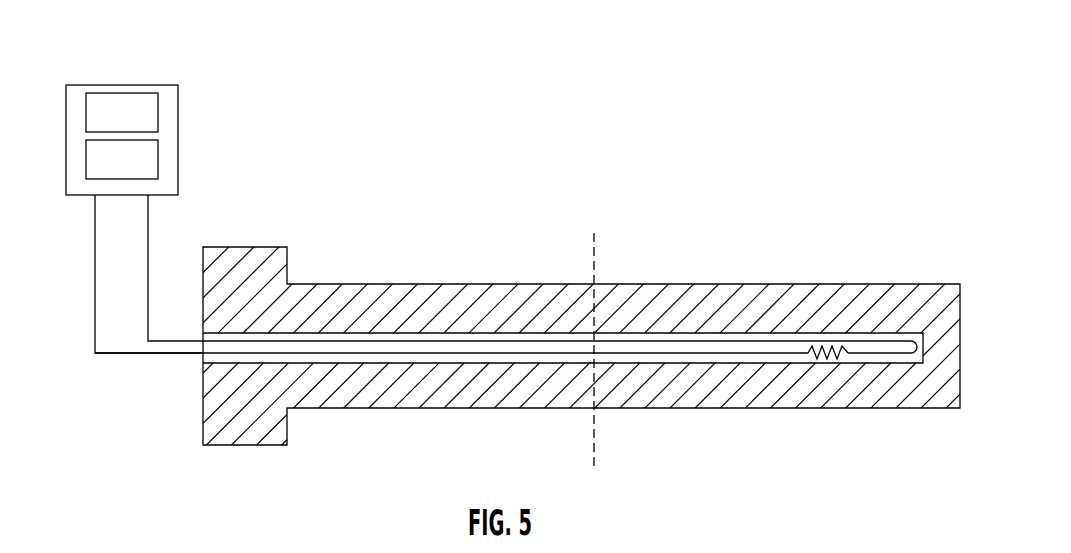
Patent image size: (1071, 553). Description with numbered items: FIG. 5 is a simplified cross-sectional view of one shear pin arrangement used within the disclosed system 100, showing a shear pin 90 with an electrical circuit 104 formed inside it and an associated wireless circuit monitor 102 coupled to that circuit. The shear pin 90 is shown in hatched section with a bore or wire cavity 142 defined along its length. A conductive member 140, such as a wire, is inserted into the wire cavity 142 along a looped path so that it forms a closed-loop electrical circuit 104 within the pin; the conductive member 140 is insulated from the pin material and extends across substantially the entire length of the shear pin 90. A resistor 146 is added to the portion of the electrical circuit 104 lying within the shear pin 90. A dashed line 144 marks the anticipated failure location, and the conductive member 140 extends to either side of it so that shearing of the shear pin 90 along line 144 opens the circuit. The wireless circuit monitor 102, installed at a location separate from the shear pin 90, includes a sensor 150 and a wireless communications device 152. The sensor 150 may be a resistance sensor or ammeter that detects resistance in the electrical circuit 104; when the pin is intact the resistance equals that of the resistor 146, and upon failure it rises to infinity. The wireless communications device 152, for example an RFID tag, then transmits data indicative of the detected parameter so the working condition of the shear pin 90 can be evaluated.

The shear pin 90 is at (415, 284).
The system 100 is at (682, 148).
The wireless circuit monitor 102 is at (149, 114).
The electrical circuit 104 is at (170, 360).
The conductive member 140 is at (722, 341).
The bore or wire cavity 142 is at (650, 333).
The line 144 is at (590, 252).
The resistor 146 is at (815, 362).
The sensor 150 is at (122, 112).
The wireless communications device 152 is at (122, 159).